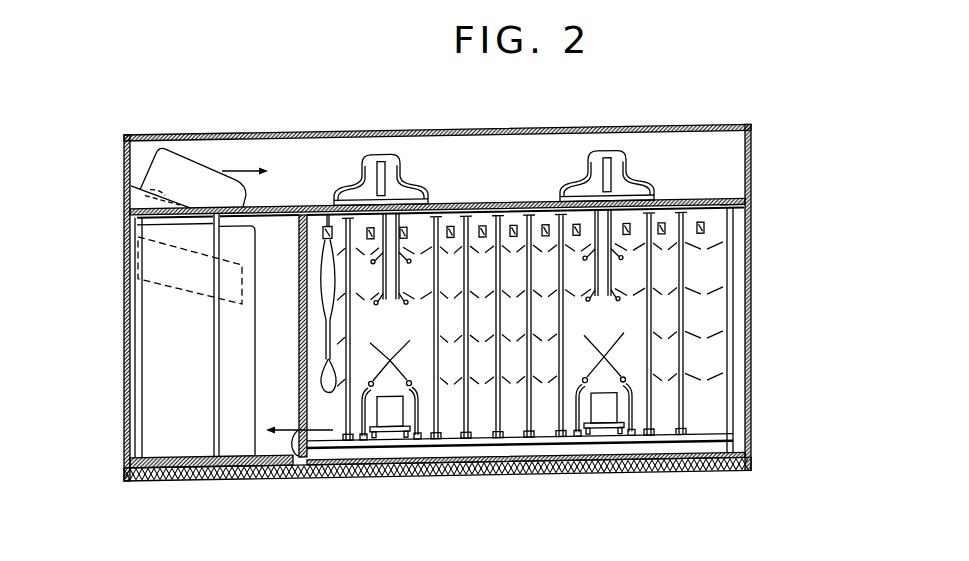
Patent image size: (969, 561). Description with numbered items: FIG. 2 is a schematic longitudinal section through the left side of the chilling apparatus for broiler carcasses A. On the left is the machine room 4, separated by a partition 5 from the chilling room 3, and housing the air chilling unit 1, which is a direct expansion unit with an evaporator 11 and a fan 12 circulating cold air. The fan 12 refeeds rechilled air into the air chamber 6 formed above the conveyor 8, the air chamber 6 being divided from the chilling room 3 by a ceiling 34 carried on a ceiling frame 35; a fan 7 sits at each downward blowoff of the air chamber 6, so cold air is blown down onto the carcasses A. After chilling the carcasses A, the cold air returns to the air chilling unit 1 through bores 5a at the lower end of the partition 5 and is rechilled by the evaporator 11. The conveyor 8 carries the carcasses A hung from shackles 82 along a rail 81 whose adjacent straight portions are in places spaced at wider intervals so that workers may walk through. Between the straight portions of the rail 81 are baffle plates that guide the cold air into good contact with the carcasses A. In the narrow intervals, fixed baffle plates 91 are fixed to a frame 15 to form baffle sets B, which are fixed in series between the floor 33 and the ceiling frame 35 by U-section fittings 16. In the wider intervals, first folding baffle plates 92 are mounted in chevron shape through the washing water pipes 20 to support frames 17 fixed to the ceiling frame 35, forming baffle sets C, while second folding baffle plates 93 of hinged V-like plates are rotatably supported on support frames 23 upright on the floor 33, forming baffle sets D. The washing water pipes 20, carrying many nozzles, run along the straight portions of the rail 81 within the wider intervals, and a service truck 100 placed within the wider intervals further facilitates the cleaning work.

The air chilling unit 1 is at (153, 355).
The chilling room 3 is at (719, 420).
The machine room 4 is at (165, 435).
The partition 5 is at (301, 400).
The bore 5a is at (306, 433).
The air chamber 6 is at (731, 152).
The fan 7 is at (372, 166).
The conveyor 8 is at (480, 228).
The evaporator 11 is at (155, 260).
The fan 12 is at (131, 192).
The frame 15 is at (683, 306).
The fitting 16 is at (668, 438).
The support frame 17 is at (398, 271).
The washing water pipe 20 is at (497, 373).
The support frame 23 is at (373, 436).
The floor 33 is at (707, 446).
The ceiling 34 is at (727, 202).
The ceiling frame 35 is at (713, 210).
The rail 81 is at (322, 233).
The shackle 82 is at (327, 330).
The fixed baffle plate 91 is at (693, 380).
The first folding baffle plate 92 is at (374, 305).
The second folding baffle plate 93 is at (401, 434).
The service truck 100 is at (603, 412).
The broiler carcass A is at (323, 287).
The baffle set B is at (700, 351).
The baffle set C is at (404, 231).
The baffle set D is at (574, 412).